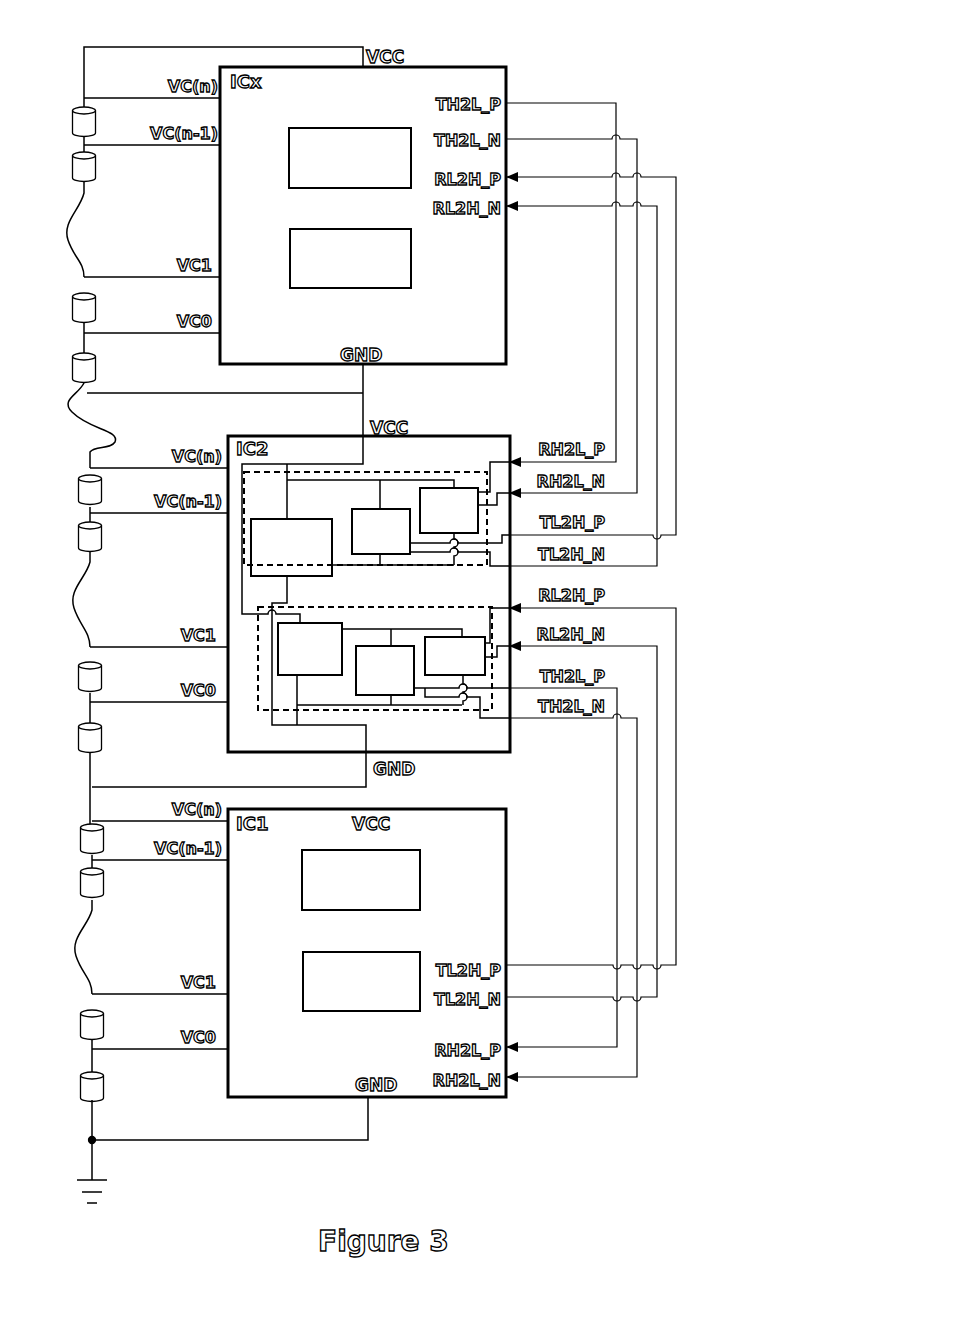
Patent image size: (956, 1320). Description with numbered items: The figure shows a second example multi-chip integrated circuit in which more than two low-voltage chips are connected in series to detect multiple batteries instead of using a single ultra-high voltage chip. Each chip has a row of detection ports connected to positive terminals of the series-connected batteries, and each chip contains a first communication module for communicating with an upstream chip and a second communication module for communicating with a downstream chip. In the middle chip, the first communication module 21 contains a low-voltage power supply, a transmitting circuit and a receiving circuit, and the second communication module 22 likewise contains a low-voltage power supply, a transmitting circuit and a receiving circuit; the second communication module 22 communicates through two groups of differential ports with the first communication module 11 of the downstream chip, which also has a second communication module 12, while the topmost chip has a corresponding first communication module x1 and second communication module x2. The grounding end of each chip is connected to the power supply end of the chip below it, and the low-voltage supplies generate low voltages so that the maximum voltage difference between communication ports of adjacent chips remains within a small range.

The first communication module of chip ICx x1 is at (360, 188).
The second communication module of chip ICx x2 is at (360, 288).
The first communication module 21 is at (402, 565).
The second communication module 22 is at (412, 705).
The first communication module 11 is at (390, 910).
The second communication module of chip IC1 12 is at (390, 1011).